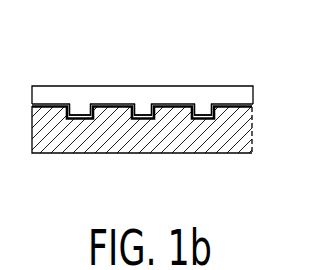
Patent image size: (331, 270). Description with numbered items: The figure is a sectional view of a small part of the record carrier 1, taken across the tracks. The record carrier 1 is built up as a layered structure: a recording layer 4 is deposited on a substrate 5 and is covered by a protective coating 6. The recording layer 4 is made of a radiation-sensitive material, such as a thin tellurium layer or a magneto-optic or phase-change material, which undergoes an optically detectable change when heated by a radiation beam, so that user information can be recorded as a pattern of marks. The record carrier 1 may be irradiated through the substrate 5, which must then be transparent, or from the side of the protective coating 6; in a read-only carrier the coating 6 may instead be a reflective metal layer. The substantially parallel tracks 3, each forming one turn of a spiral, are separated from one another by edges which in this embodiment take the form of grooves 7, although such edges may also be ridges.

The record carrier 1 is at (38, 44).
The tracks 3 is at (220, 102).
The recording layer 4 is at (243, 103).
The substrate 5 is at (53, 156).
The protective coating 6 is at (138, 93).
The grooves 7 is at (85, 120).